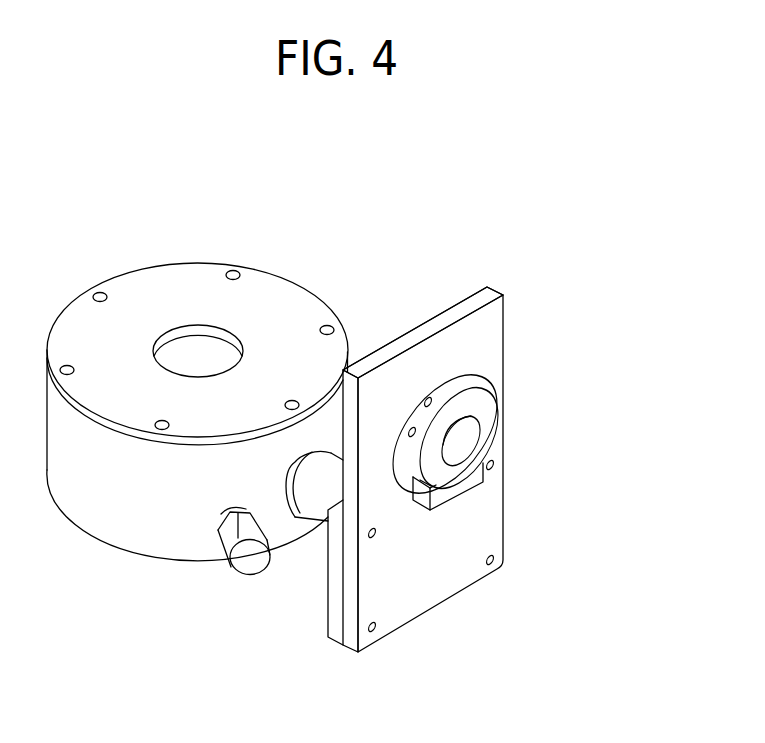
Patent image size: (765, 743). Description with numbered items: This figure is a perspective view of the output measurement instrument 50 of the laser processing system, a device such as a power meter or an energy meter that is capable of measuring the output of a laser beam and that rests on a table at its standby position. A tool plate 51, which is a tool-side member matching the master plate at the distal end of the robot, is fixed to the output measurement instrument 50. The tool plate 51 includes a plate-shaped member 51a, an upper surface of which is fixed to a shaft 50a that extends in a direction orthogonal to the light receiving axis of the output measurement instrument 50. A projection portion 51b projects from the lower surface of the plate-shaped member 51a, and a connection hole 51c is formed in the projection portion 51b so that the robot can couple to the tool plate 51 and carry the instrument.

The output measurement instrument 50 is at (92, 535).
The shaft 50a is at (300, 512).
The tool plate 51 is at (432, 612).
The plate-shaped member 51a is at (408, 328).
The projection portion 51b is at (468, 392).
The connection hole 51c is at (467, 431).